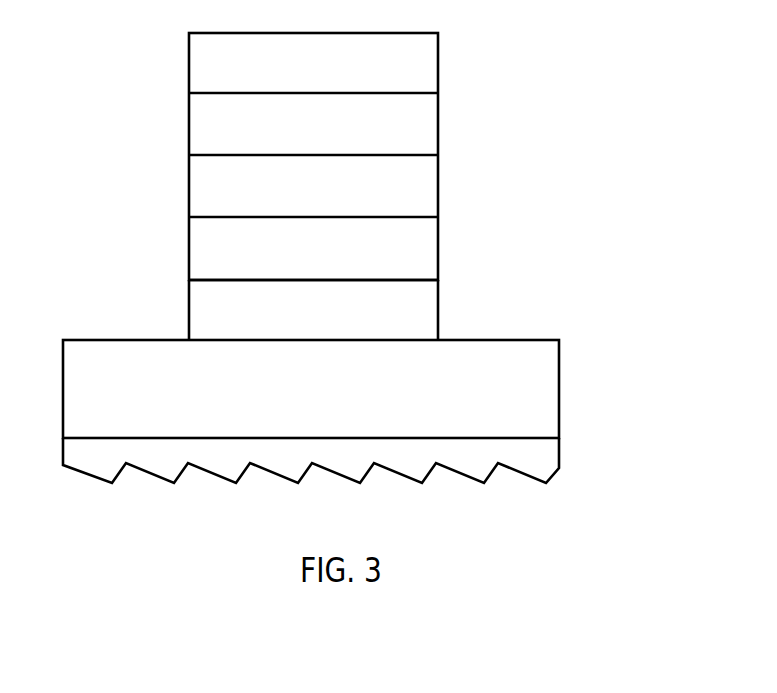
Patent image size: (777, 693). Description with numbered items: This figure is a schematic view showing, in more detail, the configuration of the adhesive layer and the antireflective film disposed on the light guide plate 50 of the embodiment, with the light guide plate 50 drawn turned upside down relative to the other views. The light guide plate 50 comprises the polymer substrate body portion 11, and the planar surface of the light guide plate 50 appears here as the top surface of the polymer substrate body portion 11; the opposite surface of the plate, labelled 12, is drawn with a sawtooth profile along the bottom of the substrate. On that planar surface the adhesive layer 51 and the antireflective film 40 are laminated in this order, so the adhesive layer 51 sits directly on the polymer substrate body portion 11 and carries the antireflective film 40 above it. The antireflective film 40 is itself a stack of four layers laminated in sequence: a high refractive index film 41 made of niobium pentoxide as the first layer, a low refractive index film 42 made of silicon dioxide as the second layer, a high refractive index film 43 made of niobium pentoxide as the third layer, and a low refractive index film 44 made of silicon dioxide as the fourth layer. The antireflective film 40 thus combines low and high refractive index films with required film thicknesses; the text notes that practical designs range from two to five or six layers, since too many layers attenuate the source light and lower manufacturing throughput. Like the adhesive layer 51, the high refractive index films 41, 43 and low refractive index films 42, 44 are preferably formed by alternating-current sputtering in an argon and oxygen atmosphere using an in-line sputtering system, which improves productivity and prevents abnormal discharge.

The antireflective film 40 is at (383, 156).
The low refractive index film 44 is at (425, 66).
The high refractive index film 43 is at (425, 128).
The low refractive index film 42 is at (425, 191).
The high refractive index film 41 is at (345, 255).
The adhesive layer 51 is at (425, 313).
The light guide plate 50 is at (373, 411).
The polymer substrate body portion 11 is at (548, 392).
The sawtooth (grating) surface 12 is at (337, 460).